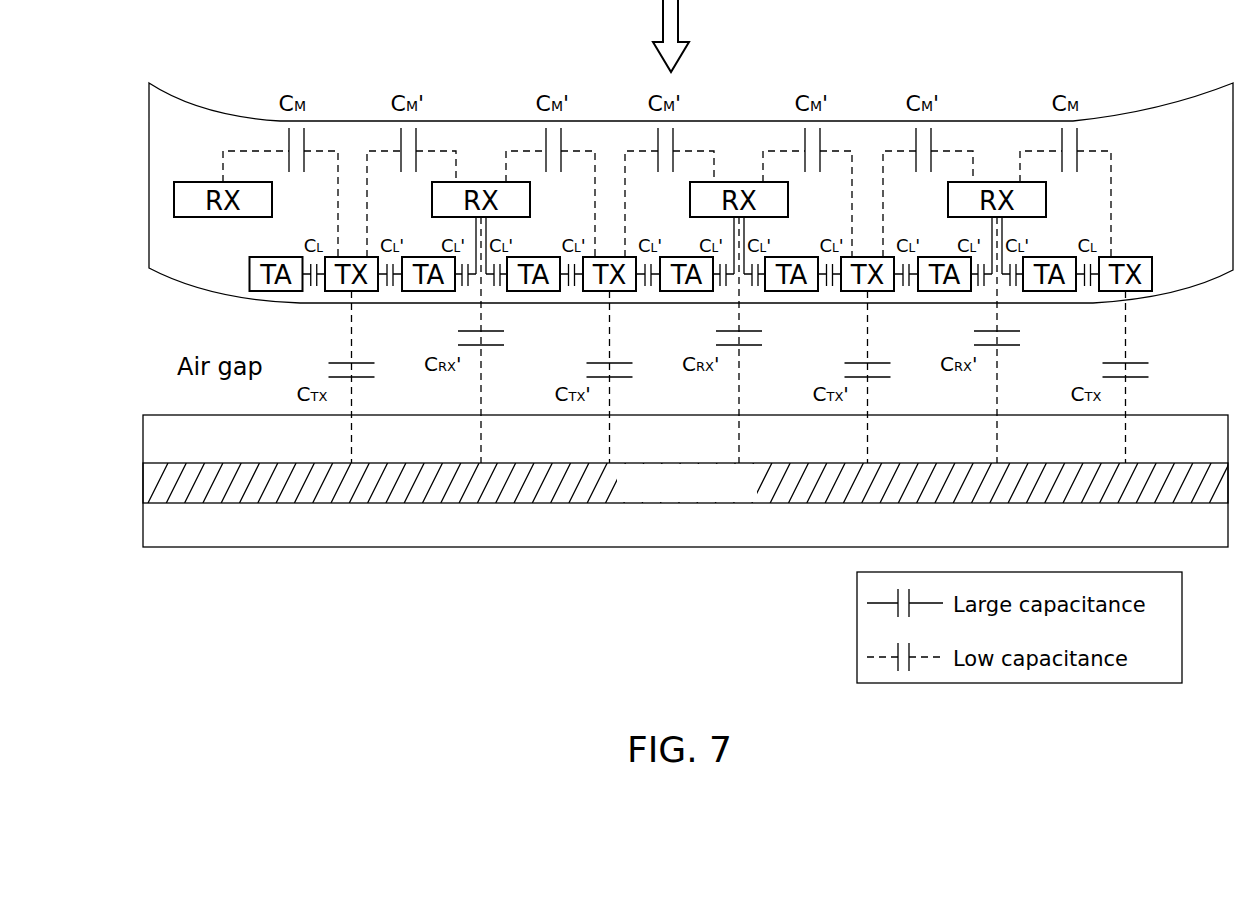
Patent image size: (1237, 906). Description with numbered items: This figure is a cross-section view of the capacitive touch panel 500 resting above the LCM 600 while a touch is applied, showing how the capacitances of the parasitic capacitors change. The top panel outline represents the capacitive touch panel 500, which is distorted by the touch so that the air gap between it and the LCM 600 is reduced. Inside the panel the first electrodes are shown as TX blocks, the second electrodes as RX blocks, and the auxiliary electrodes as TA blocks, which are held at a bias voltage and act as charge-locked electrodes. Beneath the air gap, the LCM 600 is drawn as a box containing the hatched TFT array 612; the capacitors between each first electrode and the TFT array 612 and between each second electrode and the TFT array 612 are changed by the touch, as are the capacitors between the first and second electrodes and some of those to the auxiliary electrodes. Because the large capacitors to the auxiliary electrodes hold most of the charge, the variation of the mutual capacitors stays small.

The capacitive touch panel 500 is at (182, 133).
The liquid crystal module 600 is at (438, 523).
The thin film transistor array 612 is at (540, 490).